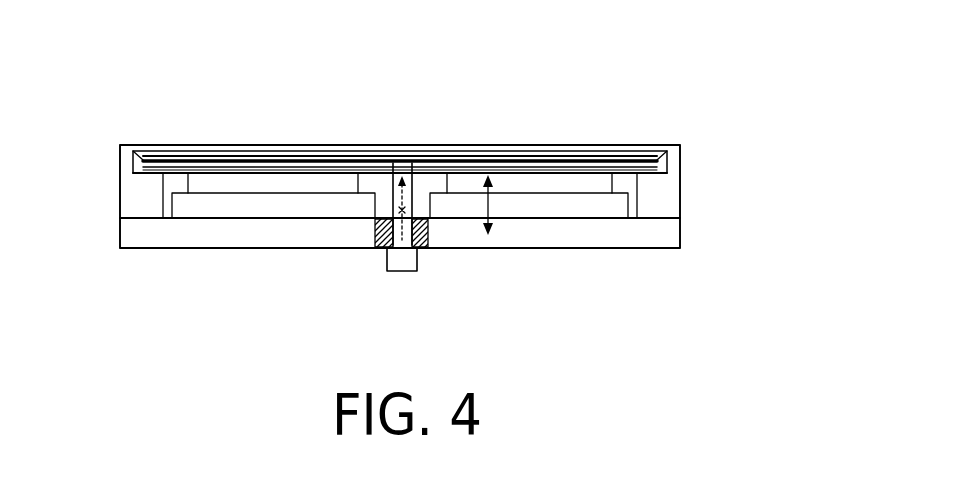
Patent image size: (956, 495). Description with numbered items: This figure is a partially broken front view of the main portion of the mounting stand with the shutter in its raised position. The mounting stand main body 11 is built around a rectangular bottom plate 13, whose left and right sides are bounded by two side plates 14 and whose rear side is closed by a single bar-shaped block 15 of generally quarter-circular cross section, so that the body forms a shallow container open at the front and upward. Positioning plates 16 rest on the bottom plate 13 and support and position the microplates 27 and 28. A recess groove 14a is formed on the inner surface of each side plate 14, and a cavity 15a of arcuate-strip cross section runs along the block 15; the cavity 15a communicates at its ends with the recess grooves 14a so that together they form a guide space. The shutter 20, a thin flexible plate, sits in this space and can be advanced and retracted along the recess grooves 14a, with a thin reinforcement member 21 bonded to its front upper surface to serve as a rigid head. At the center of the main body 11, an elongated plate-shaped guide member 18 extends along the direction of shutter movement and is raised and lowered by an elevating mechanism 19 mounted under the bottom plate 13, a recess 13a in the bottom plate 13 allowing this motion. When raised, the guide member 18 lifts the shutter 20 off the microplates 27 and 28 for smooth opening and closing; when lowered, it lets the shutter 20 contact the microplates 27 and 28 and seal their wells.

The mounting stand main body 11 is at (547, 96).
The bottom plate 13 is at (537, 237).
The recess 13a is at (377, 245).
The side plate 14 is at (120, 176).
The recess groove 14a is at (133, 150).
The bar-shaped block 15 is at (290, 158).
The cavity 15a is at (175, 155).
The positioning plate 16 is at (281, 205).
The guide member 18 is at (403, 162).
The elevating mechanism 19 is at (400, 263).
The shutter 20 is at (587, 158).
The reinforcement member 21 is at (492, 158).
The microplate 27 is at (230, 183).
The microplate 28 is at (582, 183).